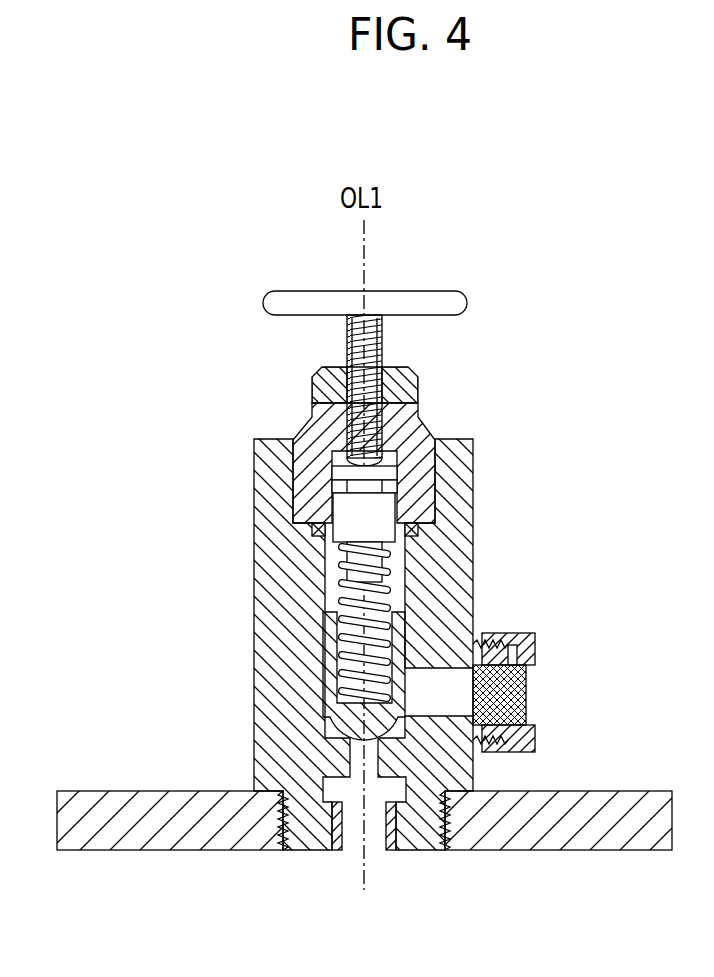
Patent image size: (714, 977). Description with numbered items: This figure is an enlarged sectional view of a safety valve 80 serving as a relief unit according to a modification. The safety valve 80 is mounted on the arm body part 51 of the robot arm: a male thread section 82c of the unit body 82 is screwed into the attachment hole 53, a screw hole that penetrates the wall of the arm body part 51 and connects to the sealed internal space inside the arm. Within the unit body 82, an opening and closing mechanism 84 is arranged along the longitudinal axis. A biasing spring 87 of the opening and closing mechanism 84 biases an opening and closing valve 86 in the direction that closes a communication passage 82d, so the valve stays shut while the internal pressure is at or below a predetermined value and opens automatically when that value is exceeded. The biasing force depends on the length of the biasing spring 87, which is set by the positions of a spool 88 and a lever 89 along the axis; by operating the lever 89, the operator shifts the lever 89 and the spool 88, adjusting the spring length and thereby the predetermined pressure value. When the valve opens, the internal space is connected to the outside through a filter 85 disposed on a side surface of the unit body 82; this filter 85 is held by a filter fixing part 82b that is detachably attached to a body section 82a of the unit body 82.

The safety valve 80 is at (562, 241).
The lever 89 is at (452, 301).
The spool 88 is at (430, 437).
The biasing spring 87 is at (400, 548).
The opening and closing valve 86 is at (403, 588).
The filter 85 is at (455, 668).
The opening and closing mechanism 84 is at (633, 283).
The unit body 82 is at (626, 610).
The body section 82a is at (473, 610).
The filter fixing part 82b is at (535, 650).
The male thread section 82c is at (467, 822).
The communication passage 82d is at (402, 781).
The arm body part 51 is at (113, 800).
The attachment hole 53 is at (288, 840).